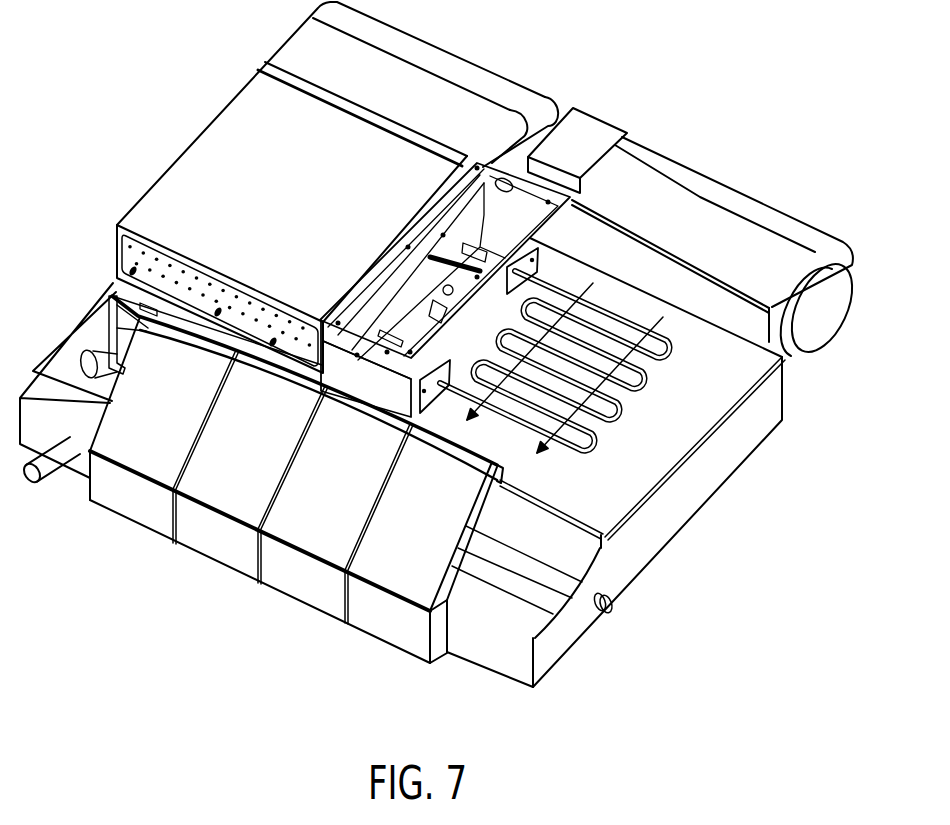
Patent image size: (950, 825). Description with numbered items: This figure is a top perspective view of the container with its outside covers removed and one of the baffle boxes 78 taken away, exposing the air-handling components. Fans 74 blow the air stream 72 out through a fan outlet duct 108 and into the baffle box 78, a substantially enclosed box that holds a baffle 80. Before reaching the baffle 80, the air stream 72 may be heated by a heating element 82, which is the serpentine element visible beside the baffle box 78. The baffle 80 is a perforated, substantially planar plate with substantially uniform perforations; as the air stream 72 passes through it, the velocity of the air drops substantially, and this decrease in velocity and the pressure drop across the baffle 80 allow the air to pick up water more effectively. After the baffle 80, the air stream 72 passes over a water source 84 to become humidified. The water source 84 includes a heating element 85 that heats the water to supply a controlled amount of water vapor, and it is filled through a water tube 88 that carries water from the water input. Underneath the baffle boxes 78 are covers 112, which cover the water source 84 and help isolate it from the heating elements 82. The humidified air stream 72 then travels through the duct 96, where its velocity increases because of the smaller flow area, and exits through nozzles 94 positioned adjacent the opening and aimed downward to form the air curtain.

The air stream 72 is at (634, 308).
The fans 74 is at (828, 324).
The baffle box 78 is at (208, 165).
The baffle 80 is at (133, 258).
The heating element 82 is at (641, 383).
The water source 84 is at (560, 550).
The heating element 85 is at (548, 580).
The water tube 88 is at (50, 458).
The nozzles 94 is at (411, 630).
The duct 96 is at (251, 463).
The fan outlet duct 108 is at (676, 288).
The covers 112 is at (652, 455).